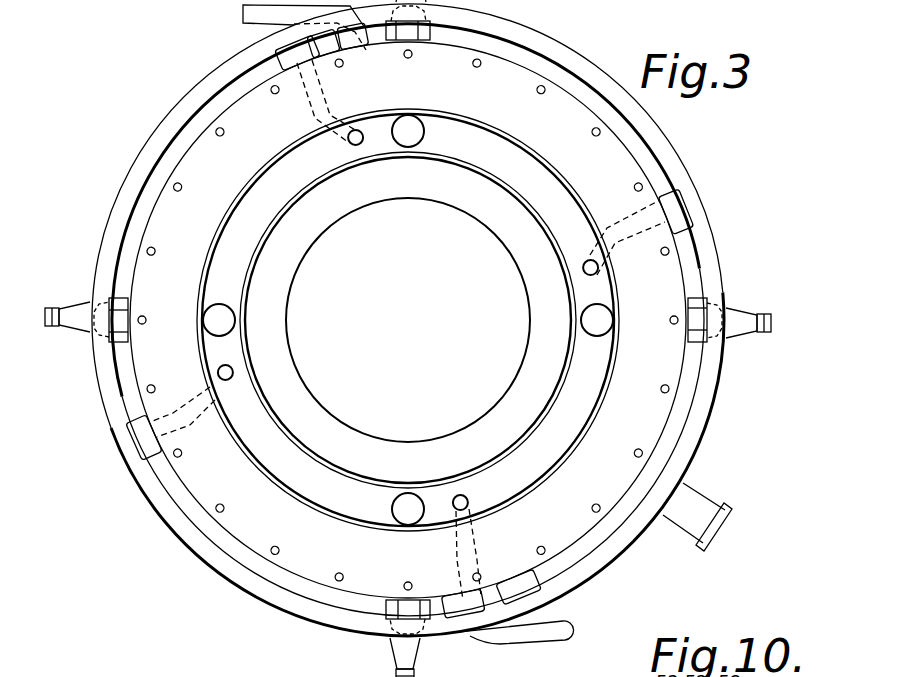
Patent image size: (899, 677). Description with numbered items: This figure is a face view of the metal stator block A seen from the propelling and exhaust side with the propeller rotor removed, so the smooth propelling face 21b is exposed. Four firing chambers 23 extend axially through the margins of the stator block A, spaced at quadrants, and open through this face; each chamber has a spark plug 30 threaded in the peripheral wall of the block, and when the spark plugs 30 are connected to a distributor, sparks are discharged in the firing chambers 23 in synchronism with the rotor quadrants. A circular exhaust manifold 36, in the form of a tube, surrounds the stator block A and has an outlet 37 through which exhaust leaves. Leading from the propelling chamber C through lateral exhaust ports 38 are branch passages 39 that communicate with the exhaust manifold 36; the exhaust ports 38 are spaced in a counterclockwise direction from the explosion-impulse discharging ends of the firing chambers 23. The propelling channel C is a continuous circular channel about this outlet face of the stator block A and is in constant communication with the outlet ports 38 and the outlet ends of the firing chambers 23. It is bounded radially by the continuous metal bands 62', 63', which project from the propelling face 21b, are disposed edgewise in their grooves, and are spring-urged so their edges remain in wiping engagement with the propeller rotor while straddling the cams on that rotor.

The spark plug 30 is at (430, 25).
The propelling face 21b is at (540, 128).
The firing chamber 23 is at (404, 147).
The exhaust port 38 is at (355, 145).
The branch passage 39 is at (312, 112).
The exhaust manifold 36 is at (697, 453).
The outlet 37 is at (715, 528).
The band 62' is at (408, 320).
The band 63' is at (591, 165).
The stator block A is at (482, 101).
The propelling channel C is at (558, 442).